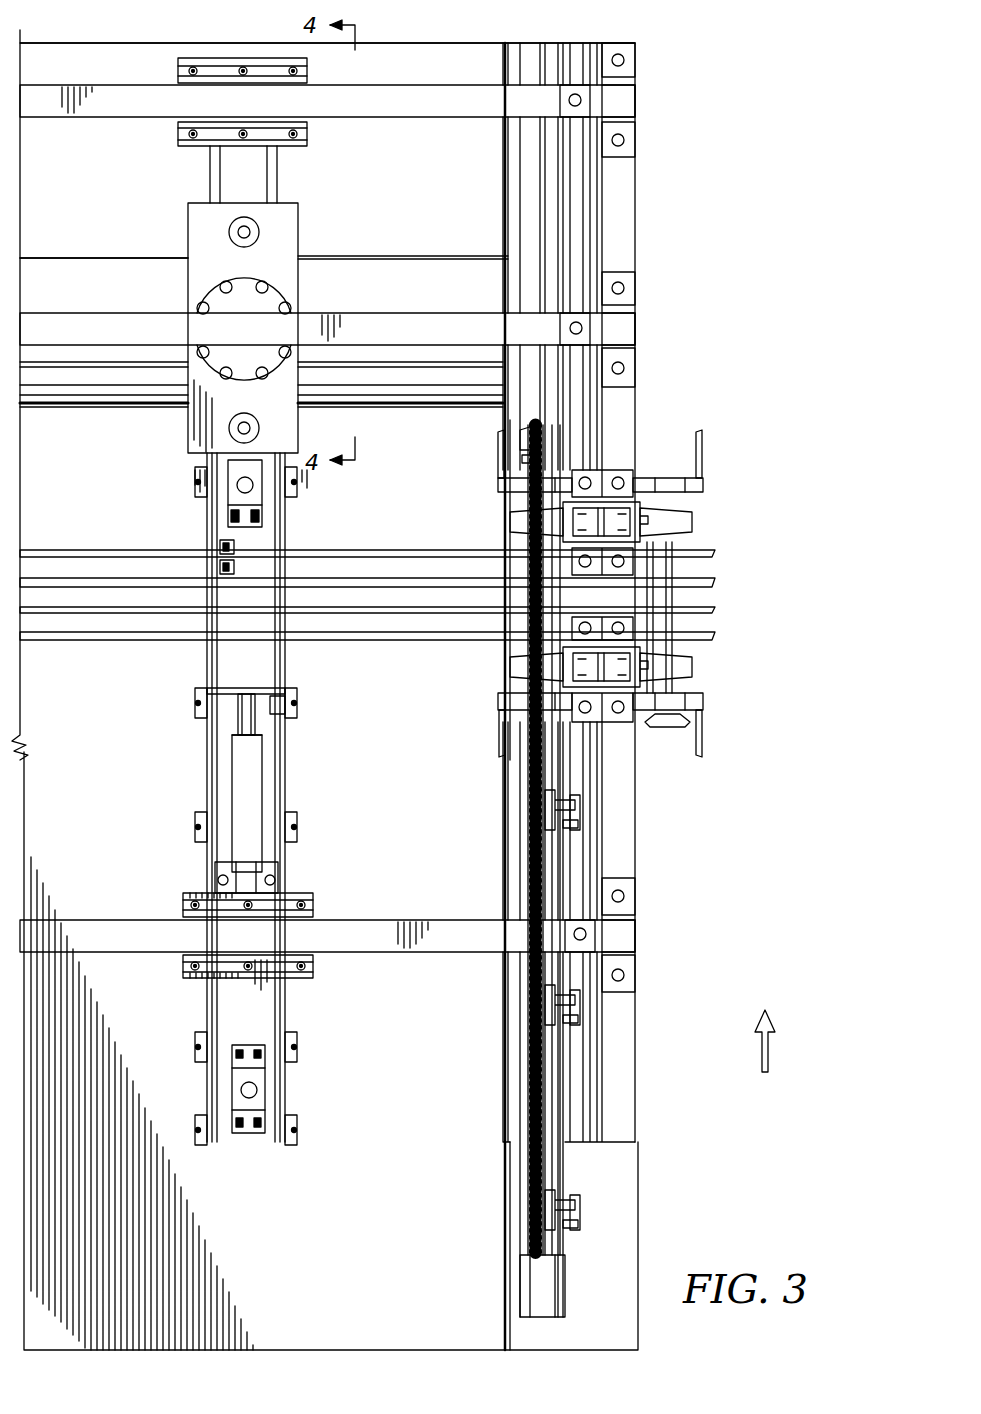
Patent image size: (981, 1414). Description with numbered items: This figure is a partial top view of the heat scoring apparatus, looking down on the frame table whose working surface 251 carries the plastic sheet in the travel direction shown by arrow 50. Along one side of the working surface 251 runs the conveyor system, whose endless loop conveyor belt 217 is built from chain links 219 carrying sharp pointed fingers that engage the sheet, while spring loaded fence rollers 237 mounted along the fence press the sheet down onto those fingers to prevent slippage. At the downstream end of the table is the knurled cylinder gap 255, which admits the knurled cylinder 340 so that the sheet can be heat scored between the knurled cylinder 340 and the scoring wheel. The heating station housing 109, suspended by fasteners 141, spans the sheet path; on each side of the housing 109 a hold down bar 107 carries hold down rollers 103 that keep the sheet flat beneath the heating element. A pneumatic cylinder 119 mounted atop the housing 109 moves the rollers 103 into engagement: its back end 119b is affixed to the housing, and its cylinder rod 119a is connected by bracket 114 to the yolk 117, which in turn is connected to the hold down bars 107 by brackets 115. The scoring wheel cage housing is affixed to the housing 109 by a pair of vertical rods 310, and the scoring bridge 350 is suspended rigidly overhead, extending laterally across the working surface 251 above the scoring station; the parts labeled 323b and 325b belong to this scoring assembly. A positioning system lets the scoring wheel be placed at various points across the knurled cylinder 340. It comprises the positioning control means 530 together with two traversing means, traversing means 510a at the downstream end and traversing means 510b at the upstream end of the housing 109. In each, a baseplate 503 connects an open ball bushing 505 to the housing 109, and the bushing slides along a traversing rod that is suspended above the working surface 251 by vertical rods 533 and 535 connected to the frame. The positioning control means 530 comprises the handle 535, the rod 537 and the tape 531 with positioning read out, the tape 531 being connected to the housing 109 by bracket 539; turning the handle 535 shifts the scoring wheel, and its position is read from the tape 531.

The arrow 50 is at (766, 1059).
The hold down roller 103 is at (207, 692).
The hold down bar 107 is at (283, 800).
The housing 109 is at (255, 1018).
The bracket 114 is at (243, 724).
The bracket 115 is at (280, 704).
The yolk 117 is at (263, 692).
The pneumatic cylinder 119 is at (252, 772).
The cylinder rod 119a is at (260, 735).
The back end 119b is at (270, 880).
The fastener 141 is at (258, 500).
The endless loop conveyor belt 217 is at (535, 1057).
The chain link 219 is at (532, 1098).
The fence roller 237 is at (545, 1020).
The working surface 251 is at (400, 55).
The knurled cylinder gap 255 is at (375, 270).
The vertical rod 310 is at (230, 234).
The flange 323b is at (213, 310).
The shaft 325b is at (200, 425).
The knurled cylinder 340 is at (61, 277).
The scoring bridge 350 is at (375, 320).
The baseplate 503 is at (195, 146).
The open ball bushing 505 is at (182, 122).
The traversing means 510a is at (385, 920).
The traversing means 510b is at (360, 105).
The positioning control means 530 is at (727, 397).
The tape 531 is at (500, 550).
The vertical rod 533 is at (620, 102).
The handle 535 is at (498, 483).
The rod 537 is at (690, 554).
The bracket 539 is at (220, 547).